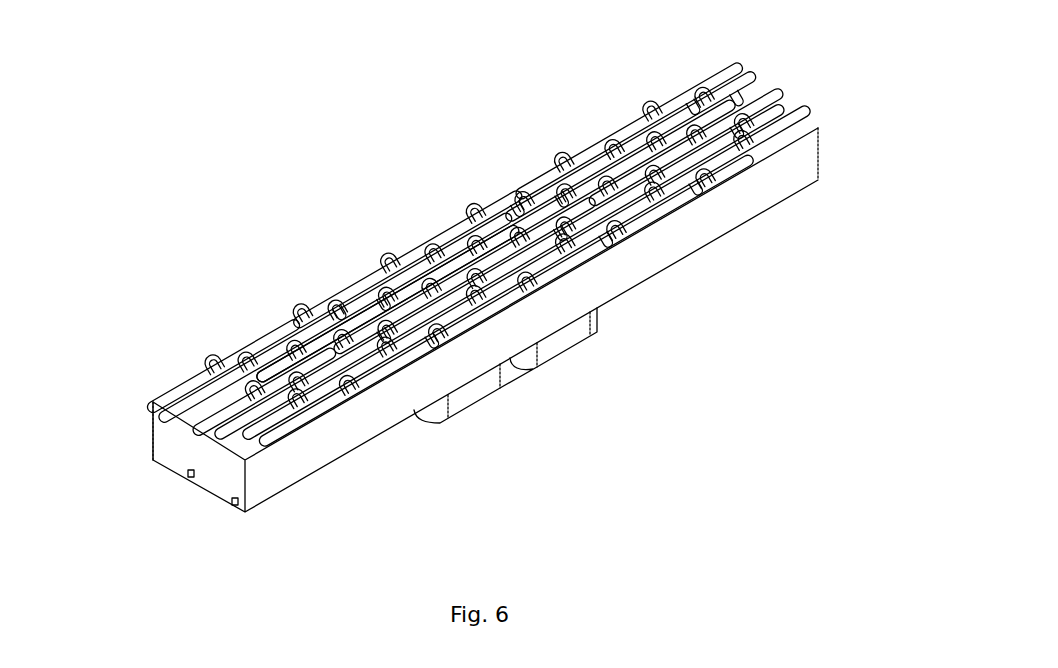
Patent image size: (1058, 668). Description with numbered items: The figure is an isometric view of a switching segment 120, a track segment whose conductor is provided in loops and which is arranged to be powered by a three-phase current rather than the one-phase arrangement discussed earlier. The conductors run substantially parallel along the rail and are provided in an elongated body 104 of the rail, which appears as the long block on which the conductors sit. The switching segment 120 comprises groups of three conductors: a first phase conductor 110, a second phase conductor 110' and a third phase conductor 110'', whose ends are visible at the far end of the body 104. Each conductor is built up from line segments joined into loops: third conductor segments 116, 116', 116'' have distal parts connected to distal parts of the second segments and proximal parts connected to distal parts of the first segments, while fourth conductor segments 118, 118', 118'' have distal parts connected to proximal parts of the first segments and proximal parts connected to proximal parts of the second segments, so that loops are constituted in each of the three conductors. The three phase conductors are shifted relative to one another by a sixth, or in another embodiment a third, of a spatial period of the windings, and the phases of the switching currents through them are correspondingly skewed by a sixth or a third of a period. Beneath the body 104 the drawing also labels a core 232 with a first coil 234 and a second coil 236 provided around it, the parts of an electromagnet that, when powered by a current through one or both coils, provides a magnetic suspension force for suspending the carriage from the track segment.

The body of the first rail 104 is at (308, 457).
The first phase conductor 110 is at (672, 112).
The second phase conductor 110' is at (686, 137).
The third phase conductor 110'' is at (748, 143).
The third conductor segment 116 is at (132, 341).
The third conductor segment of the second phase conductor 116' is at (175, 326).
The third conductor segment of the third phase conductor 116'' is at (224, 311).
The fourth conductor segment 118 is at (408, 252).
The fourth conductor segment of the second phase conductor 118' is at (335, 284).
The fourth conductor segment of the third phase conductor 118'' is at (385, 251).
The switching segment 120 is at (246, 232).
The core 232 is at (517, 387).
The first coil 234 is at (470, 397).
The second coil 236 is at (580, 345).